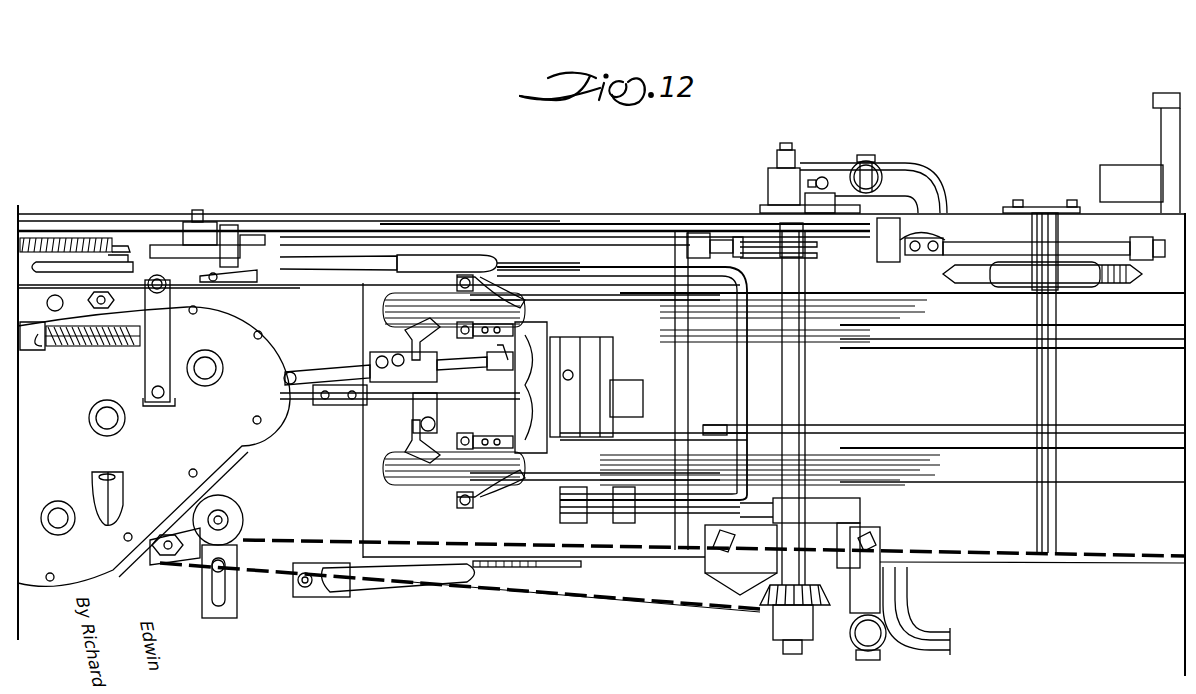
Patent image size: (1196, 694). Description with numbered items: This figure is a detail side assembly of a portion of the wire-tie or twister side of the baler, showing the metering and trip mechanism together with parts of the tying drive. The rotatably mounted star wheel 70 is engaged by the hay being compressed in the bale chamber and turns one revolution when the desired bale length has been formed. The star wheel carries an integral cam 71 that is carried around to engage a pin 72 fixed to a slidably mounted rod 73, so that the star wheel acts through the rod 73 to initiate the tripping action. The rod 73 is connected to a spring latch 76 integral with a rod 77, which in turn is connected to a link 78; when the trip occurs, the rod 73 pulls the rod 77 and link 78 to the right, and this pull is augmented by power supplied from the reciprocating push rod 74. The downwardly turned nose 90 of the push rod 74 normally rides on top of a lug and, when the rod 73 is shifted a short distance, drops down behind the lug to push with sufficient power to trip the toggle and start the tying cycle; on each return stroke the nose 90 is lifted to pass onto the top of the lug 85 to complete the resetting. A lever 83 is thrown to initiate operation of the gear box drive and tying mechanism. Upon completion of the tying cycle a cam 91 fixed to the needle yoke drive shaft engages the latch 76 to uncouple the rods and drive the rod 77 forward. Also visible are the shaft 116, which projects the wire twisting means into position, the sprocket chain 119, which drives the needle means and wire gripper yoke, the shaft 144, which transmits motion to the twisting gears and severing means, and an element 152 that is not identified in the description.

The star wheel 70 is at (997, 275).
The cam 71 is at (1108, 248).
The pin 72 is at (1078, 238).
The rod 73 is at (1130, 245).
The push rod 74 is at (698, 228).
The spring latch 76 is at (757, 278).
The rod 77 is at (432, 250).
The link 78 is at (230, 293).
The lever 83 is at (157, 365).
The lug 85 is at (923, 257).
The nose 90 is at (925, 237).
The cam 91 is at (637, 390).
The shaft 116 is at (297, 396).
The sprocket chain 119 is at (500, 590).
The shaft 144 is at (330, 370).
The shaft 152 is at (792, 410).